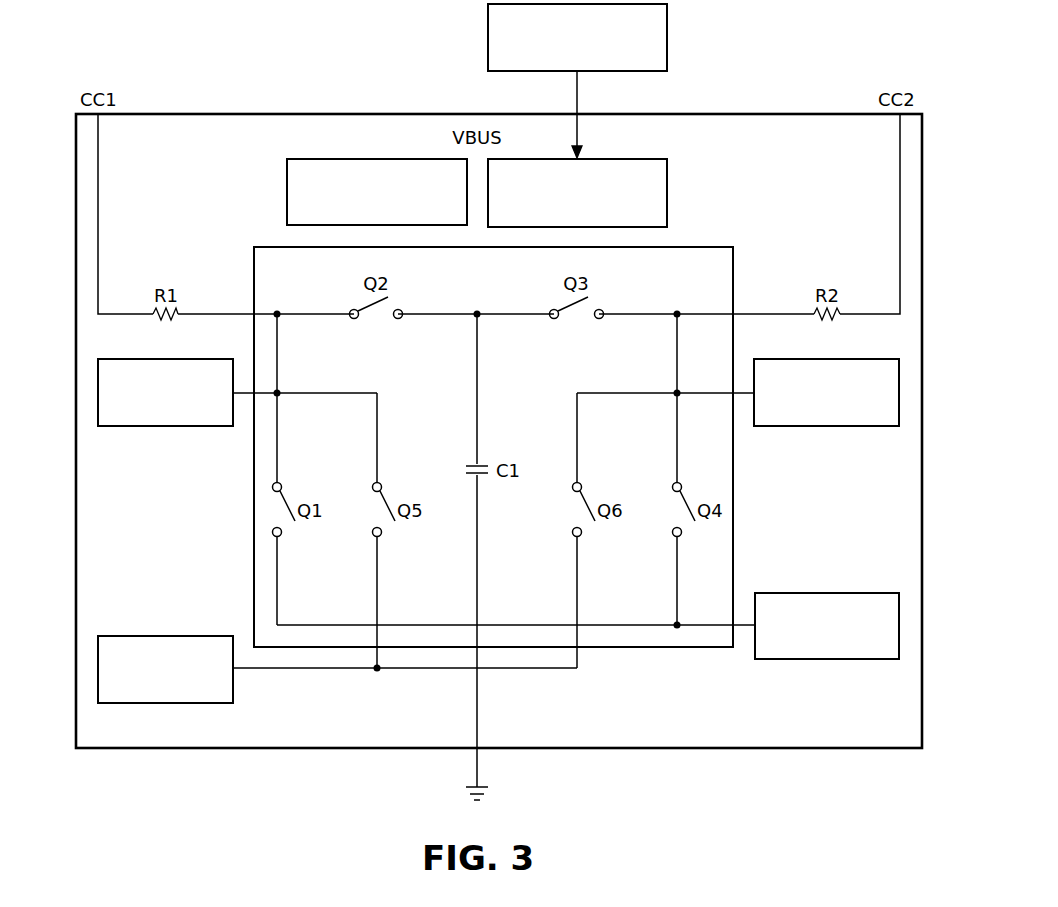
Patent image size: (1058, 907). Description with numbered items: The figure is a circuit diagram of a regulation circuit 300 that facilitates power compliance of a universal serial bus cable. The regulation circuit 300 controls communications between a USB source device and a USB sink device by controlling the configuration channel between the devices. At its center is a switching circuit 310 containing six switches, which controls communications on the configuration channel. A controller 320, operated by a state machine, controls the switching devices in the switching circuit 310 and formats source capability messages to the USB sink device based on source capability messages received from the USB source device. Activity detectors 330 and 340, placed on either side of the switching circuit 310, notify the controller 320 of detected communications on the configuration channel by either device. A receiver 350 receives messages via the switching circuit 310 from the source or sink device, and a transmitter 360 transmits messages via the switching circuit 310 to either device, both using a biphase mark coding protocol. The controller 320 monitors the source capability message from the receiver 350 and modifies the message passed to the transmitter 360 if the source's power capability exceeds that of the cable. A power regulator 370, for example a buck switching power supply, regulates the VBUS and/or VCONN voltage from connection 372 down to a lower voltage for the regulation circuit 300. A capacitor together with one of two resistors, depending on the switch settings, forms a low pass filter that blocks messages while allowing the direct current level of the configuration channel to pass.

The regulation circuit 300 is at (332, 113).
The switching circuit 310 is at (736, 269).
The controller 320 is at (287, 192).
The activity detector 330 is at (165, 426).
The activity detector 340 is at (828, 426).
The receiver 350 is at (828, 659).
The transmitter 360 is at (164, 636).
The power regulator 370 is at (667, 192).
The connection 372 is at (667, 36).